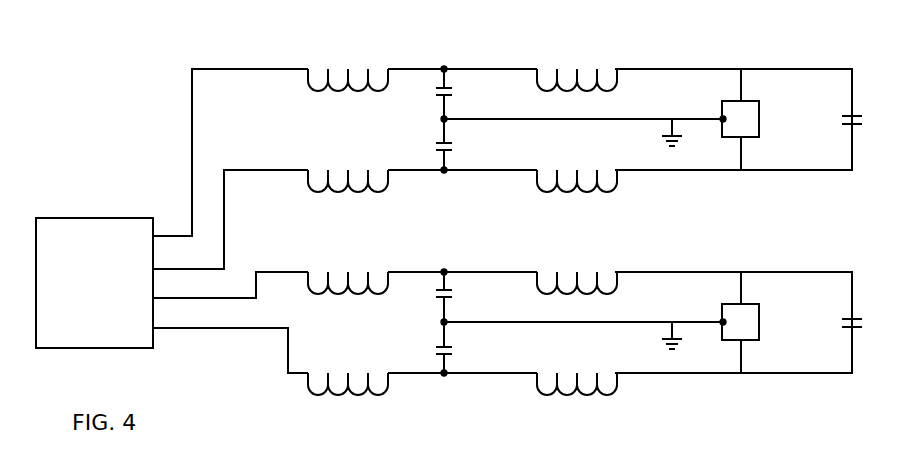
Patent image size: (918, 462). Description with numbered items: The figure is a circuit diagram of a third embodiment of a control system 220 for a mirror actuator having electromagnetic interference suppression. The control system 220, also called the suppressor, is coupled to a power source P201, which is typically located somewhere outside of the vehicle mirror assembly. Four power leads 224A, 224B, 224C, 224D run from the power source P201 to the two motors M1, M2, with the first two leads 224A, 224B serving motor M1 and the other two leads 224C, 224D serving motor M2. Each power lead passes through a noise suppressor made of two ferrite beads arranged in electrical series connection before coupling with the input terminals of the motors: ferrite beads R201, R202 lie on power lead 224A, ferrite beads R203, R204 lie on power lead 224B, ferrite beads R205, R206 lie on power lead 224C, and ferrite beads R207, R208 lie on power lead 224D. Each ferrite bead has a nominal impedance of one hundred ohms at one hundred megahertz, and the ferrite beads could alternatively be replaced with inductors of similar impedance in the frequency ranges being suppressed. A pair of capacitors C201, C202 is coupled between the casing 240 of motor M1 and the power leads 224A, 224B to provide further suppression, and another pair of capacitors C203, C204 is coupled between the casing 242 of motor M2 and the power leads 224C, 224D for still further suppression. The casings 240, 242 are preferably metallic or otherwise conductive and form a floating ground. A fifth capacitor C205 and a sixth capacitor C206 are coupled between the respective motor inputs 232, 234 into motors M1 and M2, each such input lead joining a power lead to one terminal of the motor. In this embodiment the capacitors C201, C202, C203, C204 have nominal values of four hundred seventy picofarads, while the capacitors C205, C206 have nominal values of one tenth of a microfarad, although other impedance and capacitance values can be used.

The control system 220 is at (162, 77).
The power lead 224A is at (247, 67).
The power lead 224B is at (283, 169).
The power lead 224C is at (306, 271).
The power lead 224D is at (286, 350).
The motor input 232 is at (739, 86).
The motor input 234 is at (740, 148).
The casing of motor M1 240 is at (723, 117).
The casing of motor M2 242 is at (723, 320).
The power source P201 is at (94, 270).
The ferrite bead R201 is at (348, 67).
The ferrite bead R202 is at (577, 67).
The ferrite bead R203 is at (348, 169).
The ferrite bead R204 is at (577, 169).
The ferrite bead R205 is at (348, 270).
The ferrite bead R206 is at (577, 270).
The ferrite bead R207 is at (348, 372).
The ferrite bead R208 is at (577, 372).
The capacitor C201 is at (471, 94).
The capacitor C202 is at (471, 144).
The capacitor C203 is at (471, 297).
The capacitor C204 is at (471, 347).
The capacitor C205 is at (827, 120).
The capacitor C206 is at (827, 323).
The motor M1 is at (740, 119).
The motor M2 is at (740, 322).